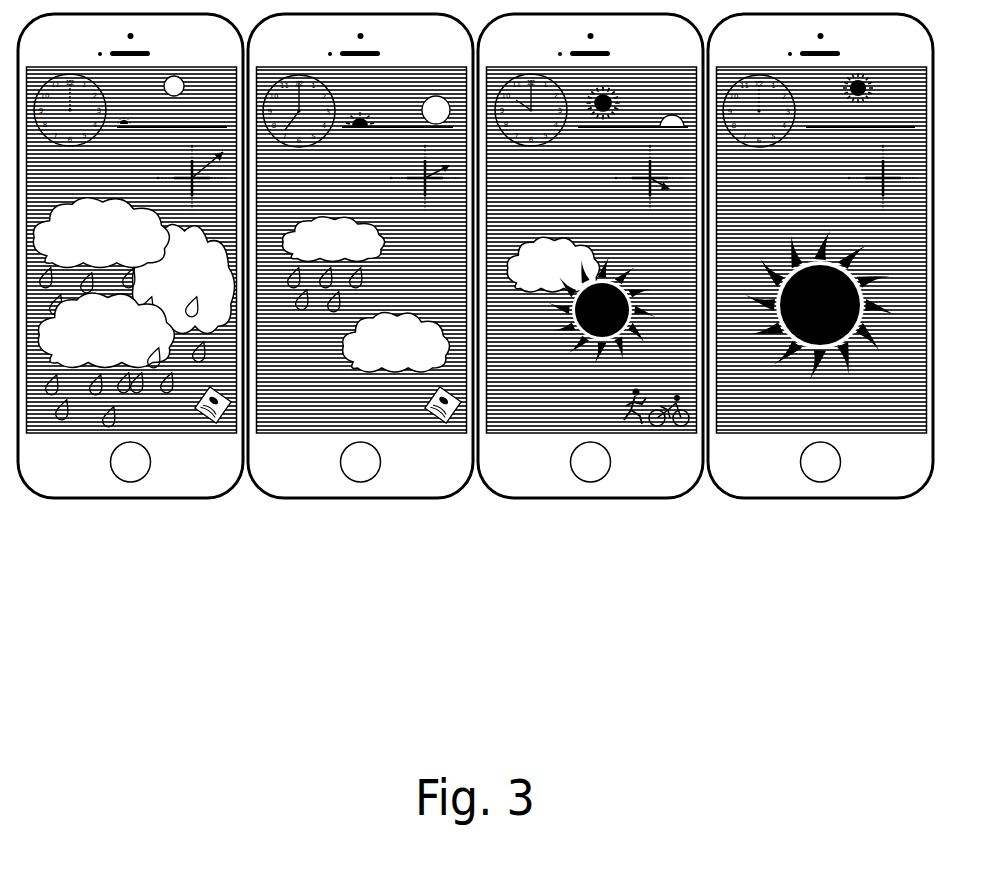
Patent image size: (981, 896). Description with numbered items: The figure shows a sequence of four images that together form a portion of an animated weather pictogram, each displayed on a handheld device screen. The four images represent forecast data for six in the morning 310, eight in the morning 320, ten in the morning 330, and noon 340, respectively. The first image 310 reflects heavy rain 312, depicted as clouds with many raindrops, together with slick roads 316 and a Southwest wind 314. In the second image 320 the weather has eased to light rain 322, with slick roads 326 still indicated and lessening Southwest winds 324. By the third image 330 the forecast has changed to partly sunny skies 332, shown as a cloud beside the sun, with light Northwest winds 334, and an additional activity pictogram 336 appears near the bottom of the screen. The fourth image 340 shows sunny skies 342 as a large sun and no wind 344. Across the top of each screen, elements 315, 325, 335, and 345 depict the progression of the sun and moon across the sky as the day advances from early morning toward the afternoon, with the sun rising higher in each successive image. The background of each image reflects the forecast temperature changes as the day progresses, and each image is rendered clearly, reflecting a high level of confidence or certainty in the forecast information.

The 6 am forecast image 310 is at (130, 282).
The heavy rain 312 is at (133, 237).
The Southwest wind 314 is at (186, 168).
The sun and moon progression 315 is at (165, 102).
The slick roads 316 is at (192, 423).
The 8 am forecast image 320 is at (360, 283).
The light rain 322 is at (410, 298).
The lessening Southwest winds 324 is at (410, 171).
The sun and moon progression 325 is at (405, 102).
The slick roads 326 is at (418, 423).
The 10 am forecast image 330 is at (590, 285).
The partly sunny skies 332 is at (598, 271).
The light Northwest winds 334 is at (640, 171).
The sun and moon progression 335 is at (675, 102).
The activity indicator 336 is at (615, 423).
The 12 pm forecast image 340 is at (820, 283).
The sunny skies 342 is at (848, 315).
The no wind 344 is at (853, 173).
The sun and moon progression 345 is at (923, 116).